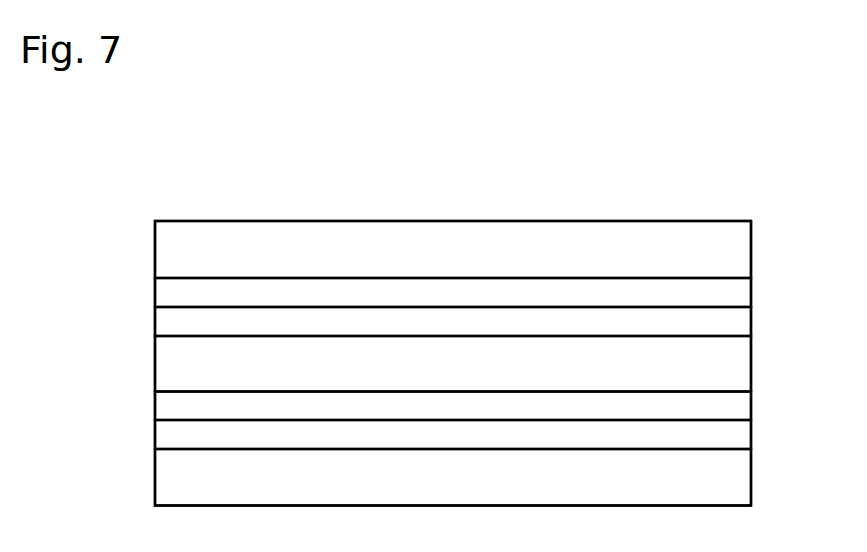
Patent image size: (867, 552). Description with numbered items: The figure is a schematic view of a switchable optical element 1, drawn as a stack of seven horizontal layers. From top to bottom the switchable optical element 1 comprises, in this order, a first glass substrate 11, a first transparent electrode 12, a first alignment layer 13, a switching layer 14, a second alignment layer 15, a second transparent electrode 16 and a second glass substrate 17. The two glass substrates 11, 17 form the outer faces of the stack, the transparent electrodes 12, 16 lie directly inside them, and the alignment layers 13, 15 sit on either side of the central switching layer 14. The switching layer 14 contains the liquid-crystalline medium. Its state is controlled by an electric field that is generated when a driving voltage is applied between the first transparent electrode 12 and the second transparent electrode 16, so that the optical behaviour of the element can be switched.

The switchable optical element 1 is at (783, 170).
The first glass substrate 11 is at (728, 252).
The first transparent electrode 12 is at (728, 296).
The first alignment layer 13 is at (728, 324).
The switching layer 14 is at (728, 368).
The second alignment layer 15 is at (728, 410).
The second transparent electrode 16 is at (728, 439).
The second glass substrate 17 is at (728, 482).